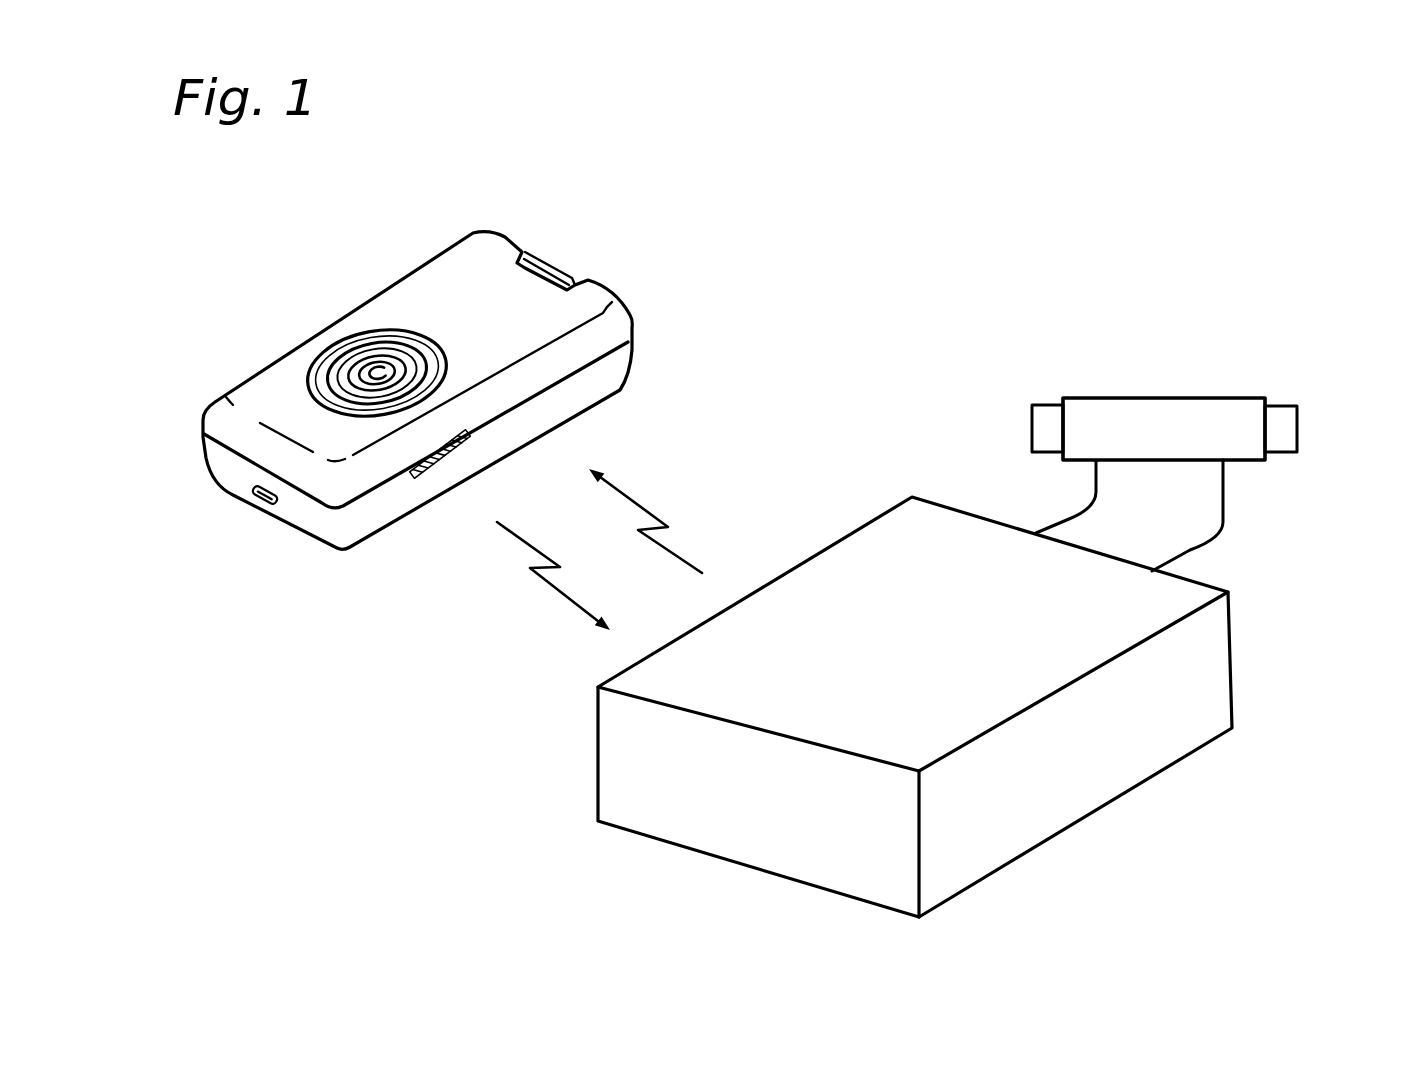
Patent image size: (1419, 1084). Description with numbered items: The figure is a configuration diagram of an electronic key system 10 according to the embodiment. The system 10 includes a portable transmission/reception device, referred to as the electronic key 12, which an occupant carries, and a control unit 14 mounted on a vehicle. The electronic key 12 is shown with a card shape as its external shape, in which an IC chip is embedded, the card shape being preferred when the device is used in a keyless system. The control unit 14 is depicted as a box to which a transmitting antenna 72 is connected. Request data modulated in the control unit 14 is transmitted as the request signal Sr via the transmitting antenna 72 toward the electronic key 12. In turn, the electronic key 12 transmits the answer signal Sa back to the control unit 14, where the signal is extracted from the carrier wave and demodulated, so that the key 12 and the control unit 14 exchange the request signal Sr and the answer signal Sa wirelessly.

The electronic key system 10 is at (740, 238).
The electronic key 12 is at (413, 276).
The control unit 14 is at (955, 538).
The transmitting antenna 72 is at (1213, 398).
The answer signal Sa is at (592, 551).
The request signal Sr is at (746, 461).